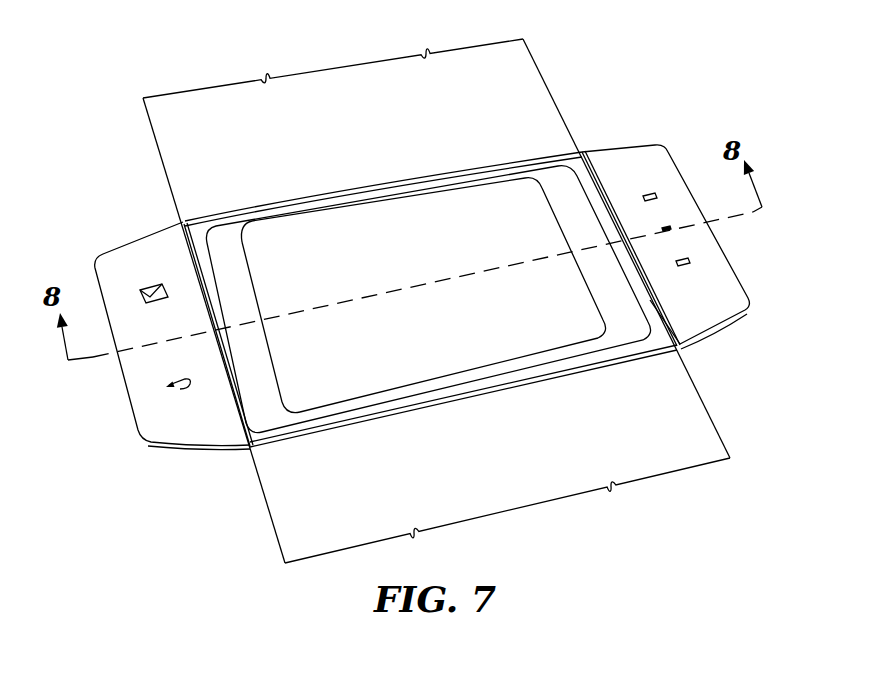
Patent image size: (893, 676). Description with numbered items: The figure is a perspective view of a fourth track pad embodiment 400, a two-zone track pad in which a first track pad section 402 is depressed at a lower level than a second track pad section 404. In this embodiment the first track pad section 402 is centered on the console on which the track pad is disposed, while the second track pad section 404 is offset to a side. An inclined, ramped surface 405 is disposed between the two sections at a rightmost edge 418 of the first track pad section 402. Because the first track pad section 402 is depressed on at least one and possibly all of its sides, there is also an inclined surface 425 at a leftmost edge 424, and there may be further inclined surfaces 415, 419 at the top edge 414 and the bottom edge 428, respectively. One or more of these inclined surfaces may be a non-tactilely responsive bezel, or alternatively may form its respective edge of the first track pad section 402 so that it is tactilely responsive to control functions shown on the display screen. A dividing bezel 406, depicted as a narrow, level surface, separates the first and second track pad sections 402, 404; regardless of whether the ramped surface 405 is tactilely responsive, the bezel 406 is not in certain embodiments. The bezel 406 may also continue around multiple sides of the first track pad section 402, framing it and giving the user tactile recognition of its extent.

The fourth track pad embodiment 400 is at (213, 472).
The first track pad section 402 is at (389, 276).
The second track pad section 404 is at (677, 227).
The ramped surface 405 is at (585, 252).
The dividing bezel 406 is at (585, 176).
The top edge 414 is at (429, 179).
The inclined surface 415 is at (423, 295).
The rightmost edge 418 is at (645, 300).
The inclined surface 419 is at (380, 394).
The leftmost edge 424 is at (245, 322).
The inclined surface 425 is at (258, 368).
The bottom edge 428 is at (462, 386).